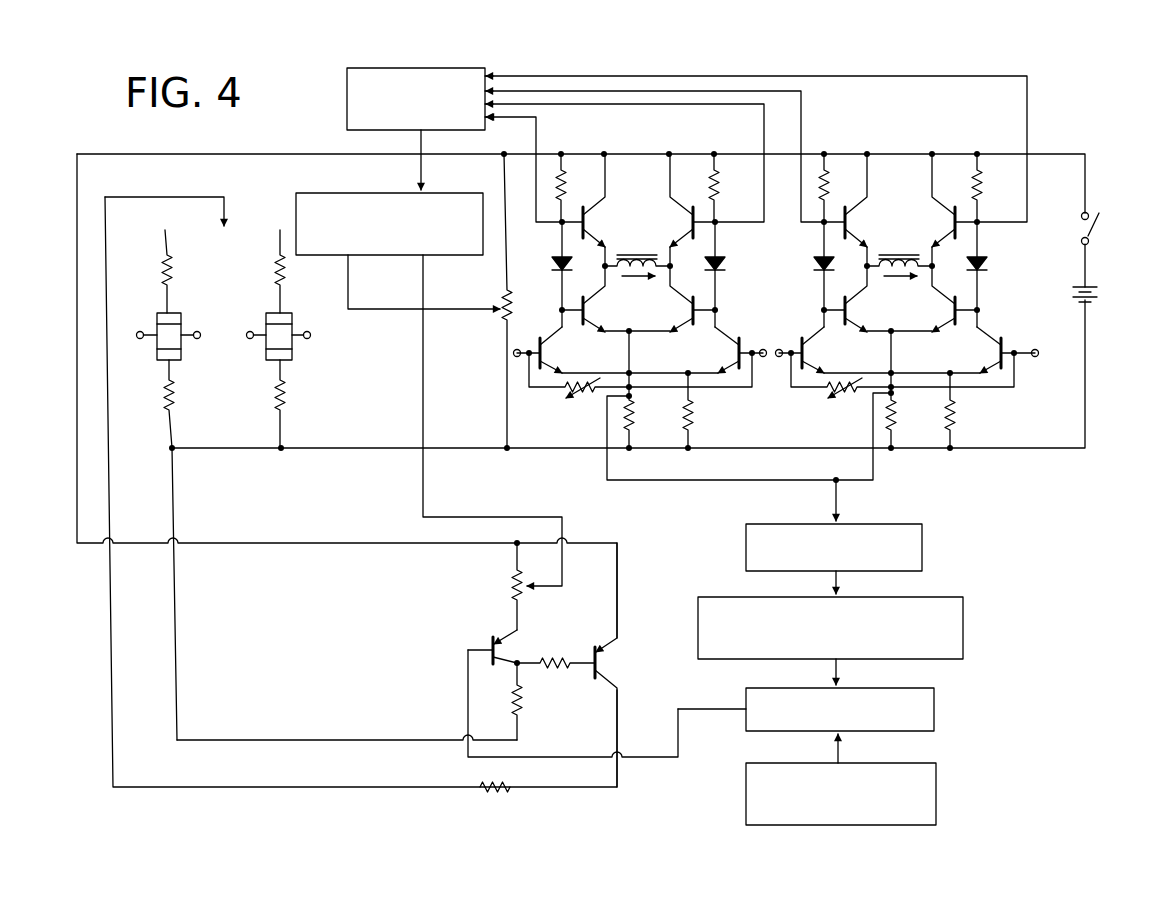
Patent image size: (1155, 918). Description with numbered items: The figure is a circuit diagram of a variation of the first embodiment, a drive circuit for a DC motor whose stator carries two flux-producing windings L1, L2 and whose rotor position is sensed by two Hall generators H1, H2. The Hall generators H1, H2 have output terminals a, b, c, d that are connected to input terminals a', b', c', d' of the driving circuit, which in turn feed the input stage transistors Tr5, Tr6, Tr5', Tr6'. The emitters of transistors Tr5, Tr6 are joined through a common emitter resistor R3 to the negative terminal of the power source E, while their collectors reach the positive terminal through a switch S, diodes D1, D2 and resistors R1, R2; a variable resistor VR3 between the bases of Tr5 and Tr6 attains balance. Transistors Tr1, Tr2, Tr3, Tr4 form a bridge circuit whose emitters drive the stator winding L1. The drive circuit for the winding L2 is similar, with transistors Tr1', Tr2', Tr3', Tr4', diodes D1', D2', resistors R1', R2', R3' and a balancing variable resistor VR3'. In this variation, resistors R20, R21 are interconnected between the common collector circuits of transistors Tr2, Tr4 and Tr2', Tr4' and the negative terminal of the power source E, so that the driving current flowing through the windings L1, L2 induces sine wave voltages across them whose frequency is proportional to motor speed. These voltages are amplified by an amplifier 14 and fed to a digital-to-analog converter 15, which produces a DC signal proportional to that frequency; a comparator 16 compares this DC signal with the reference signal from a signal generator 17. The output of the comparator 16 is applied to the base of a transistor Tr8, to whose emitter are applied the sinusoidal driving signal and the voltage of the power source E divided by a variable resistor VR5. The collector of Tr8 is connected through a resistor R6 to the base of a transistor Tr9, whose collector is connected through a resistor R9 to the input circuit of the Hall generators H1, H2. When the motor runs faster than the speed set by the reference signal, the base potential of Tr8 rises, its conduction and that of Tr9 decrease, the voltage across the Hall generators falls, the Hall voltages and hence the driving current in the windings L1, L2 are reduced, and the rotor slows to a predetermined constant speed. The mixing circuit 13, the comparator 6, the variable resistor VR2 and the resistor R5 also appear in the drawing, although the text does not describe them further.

The mixing circuit 13 is at (347, 121).
The comparator 6 is at (385, 258).
The amplifier 14 is at (922, 548).
The digital-to-analog converter 15 is at (963, 614).
The comparator 16 is at (934, 706).
The signal generator 17 is at (625, 475).
The variable resistor VR2 is at (500, 324).
The variable resistor VR3 is at (640, 395).
The variable resistor VR3' is at (902, 395).
The variable resistor VR5 is at (526, 592).
The Hall generator H1 is at (160, 312).
The Hall generator H2 is at (266, 353).
The output terminal a is at (144, 321).
The output terminal b is at (191, 321).
The output terminal c is at (253, 321).
The output terminal d is at (302, 321).
The input terminal a' is at (526, 340).
The input terminal b' is at (765, 340).
The input terminal c' is at (780, 340).
The input terminal d' is at (1045, 345).
The resistor R1 is at (577, 173).
The resistor R2 is at (728, 173).
The resistor R1' is at (841, 173).
The resistor R2' is at (993, 173).
The common emitter resistor R3 is at (710, 410).
The common emitter resistor R3' is at (978, 410).
The resistor R20 is at (635, 410).
The resistor R21 is at (897, 410).
The resistor R5 is at (524, 702).
The resistor R6 is at (550, 668).
The resistor R9 is at (496, 790).
The transistor Tr1 is at (615, 210).
The transistor Tr2 is at (616, 299).
The transistor Tr3 is at (655, 210).
The transistor Tr4 is at (678, 315).
The transistor Tr5 is at (617, 350).
The transistor Tr6 is at (739, 336).
The transistor Tr1' is at (879, 210).
The transistor Tr2' is at (878, 299).
The transistor Tr3' is at (917, 210).
The transistor Tr4' is at (942, 315).
The transistor Tr5' is at (879, 350).
The transistor Tr6' is at (1006, 330).
The transistor Tr8 is at (503, 648).
The transistor Tr9 is at (604, 650).
The diode D1 is at (542, 274).
The diode D2 is at (734, 274).
The diode D1' is at (802, 274).
The diode D2' is at (1004, 274).
The stator winding L1 is at (640, 278).
The stator winding L2 is at (900, 278).
The switch S is at (1097, 231).
The power source E is at (1071, 292).